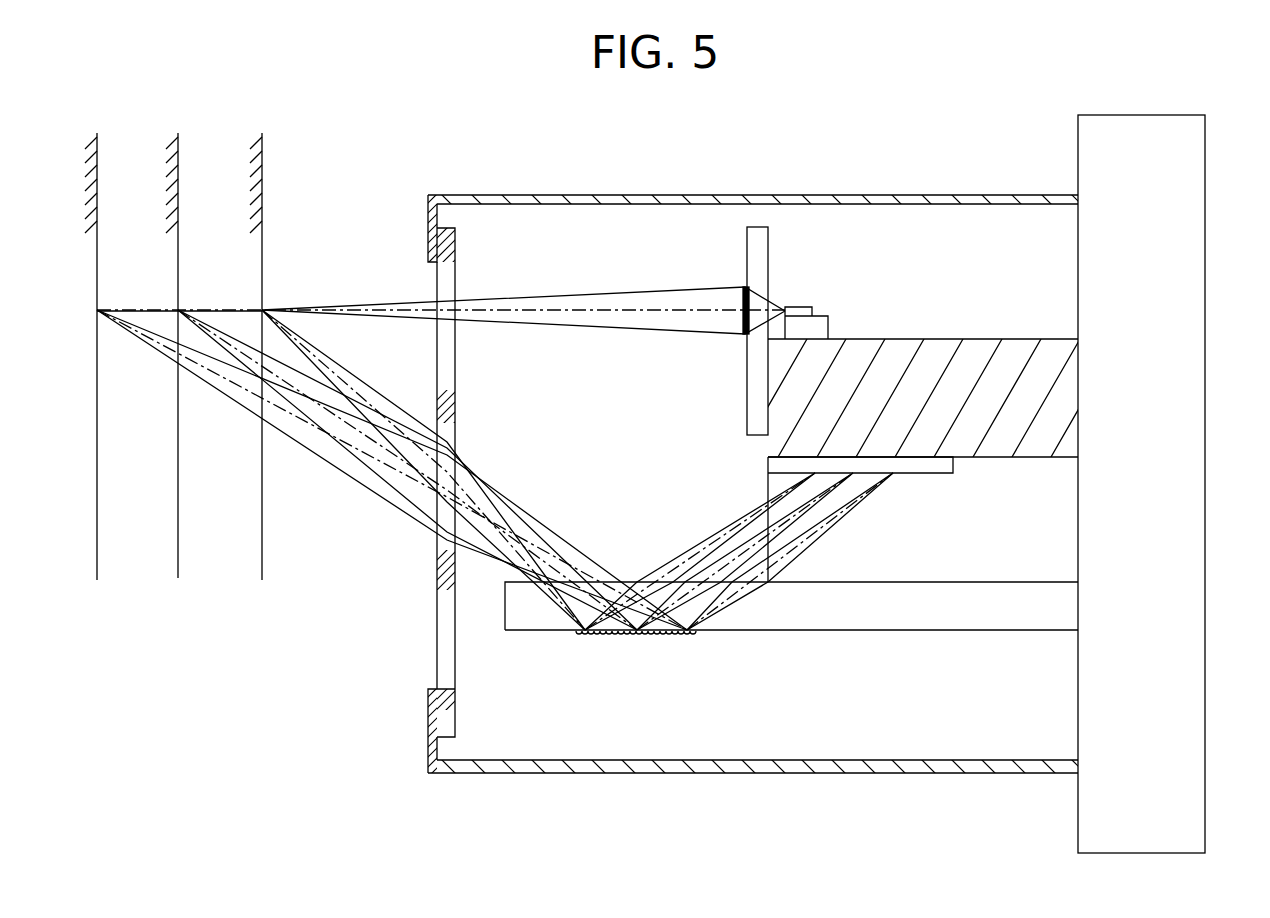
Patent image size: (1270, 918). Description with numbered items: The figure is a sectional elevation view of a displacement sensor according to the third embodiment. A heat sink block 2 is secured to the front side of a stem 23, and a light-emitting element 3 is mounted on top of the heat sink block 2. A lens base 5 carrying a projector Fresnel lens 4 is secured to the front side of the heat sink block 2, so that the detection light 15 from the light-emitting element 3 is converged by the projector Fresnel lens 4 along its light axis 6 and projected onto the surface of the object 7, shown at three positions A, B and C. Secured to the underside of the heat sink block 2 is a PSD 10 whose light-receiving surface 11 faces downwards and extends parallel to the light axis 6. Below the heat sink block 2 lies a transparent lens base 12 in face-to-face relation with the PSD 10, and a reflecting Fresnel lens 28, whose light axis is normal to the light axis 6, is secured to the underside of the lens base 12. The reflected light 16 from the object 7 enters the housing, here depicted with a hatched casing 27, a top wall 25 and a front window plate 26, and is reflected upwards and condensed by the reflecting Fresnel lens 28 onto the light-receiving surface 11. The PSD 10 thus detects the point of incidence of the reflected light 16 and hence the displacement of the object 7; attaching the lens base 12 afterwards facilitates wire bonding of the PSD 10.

The heat sink block 2 is at (918, 345).
The light-emitting element 3 is at (790, 310).
The projector Fresnel lens 4 is at (744, 305).
The lens base 5 is at (752, 270).
The light axis 6 is at (560, 310).
The object 7 is at (97, 550).
The PSD 10 is at (773, 470).
The light-receiving surface 11 is at (908, 475).
The lens base 12 is at (785, 615).
The detection light 15 is at (365, 301).
The reflected light 16 is at (383, 428).
The stem 23 is at (1180, 530).
The housing top wall 25 is at (470, 201).
The window plate 26 is at (443, 652).
The housing 27 is at (756, 435).
The reflecting Fresnel lens 28 is at (595, 633).